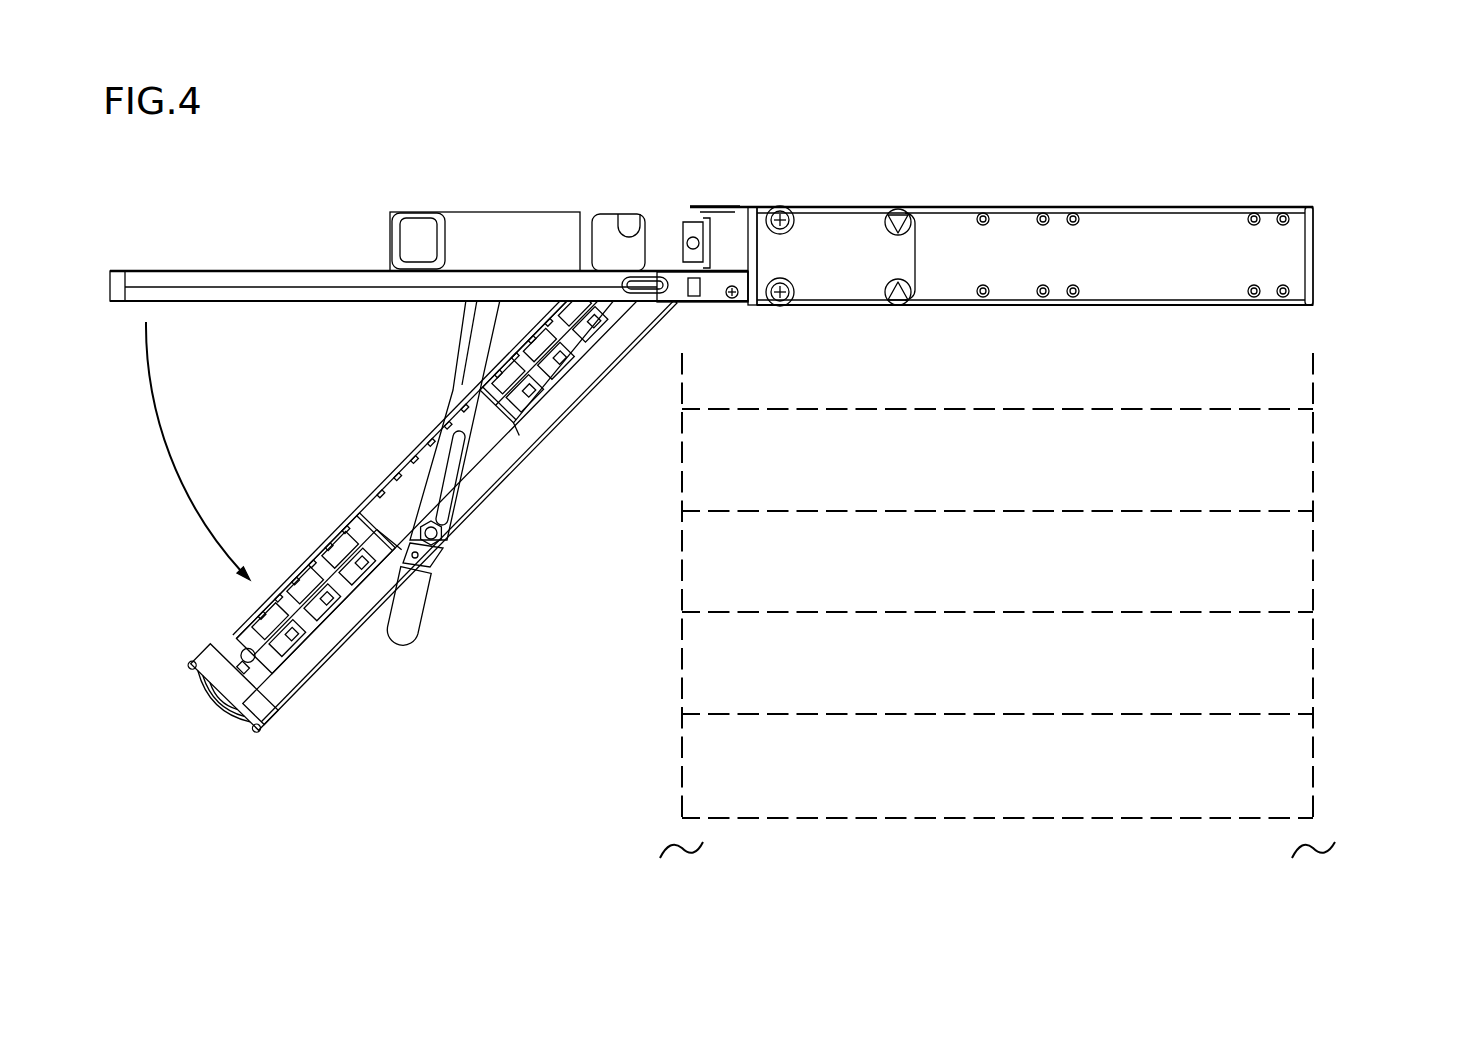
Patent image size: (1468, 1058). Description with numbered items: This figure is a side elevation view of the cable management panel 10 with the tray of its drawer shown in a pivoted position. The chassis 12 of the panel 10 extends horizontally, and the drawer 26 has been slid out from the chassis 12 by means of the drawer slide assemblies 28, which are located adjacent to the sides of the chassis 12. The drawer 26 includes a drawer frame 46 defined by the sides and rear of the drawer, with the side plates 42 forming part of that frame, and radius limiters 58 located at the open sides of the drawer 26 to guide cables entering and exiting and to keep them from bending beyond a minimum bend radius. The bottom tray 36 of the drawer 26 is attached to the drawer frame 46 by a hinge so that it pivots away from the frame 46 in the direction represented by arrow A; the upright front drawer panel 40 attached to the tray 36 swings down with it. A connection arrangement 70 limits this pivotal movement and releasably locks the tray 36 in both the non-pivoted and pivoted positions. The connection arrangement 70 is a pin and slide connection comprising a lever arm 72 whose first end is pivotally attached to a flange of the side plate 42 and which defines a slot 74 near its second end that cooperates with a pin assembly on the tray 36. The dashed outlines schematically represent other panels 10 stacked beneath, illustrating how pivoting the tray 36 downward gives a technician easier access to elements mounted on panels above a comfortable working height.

The cable management panel 10 is at (769, 132).
The chassis 12 is at (1112, 195).
The drawer 26 is at (430, 480).
The drawer slide assemblies 28 is at (322, 303).
The tray 36 is at (460, 503).
The upright front drawer panel 40 is at (230, 690).
The side plate 42 is at (290, 271).
The drawer frame 46 is at (160, 250).
The radius limiters 58 is at (515, 225).
The connection arrangement 70 is at (504, 470).
The lever arm 72 is at (487, 318).
The slot 74 is at (440, 480).
The arrow A is at (195, 451).